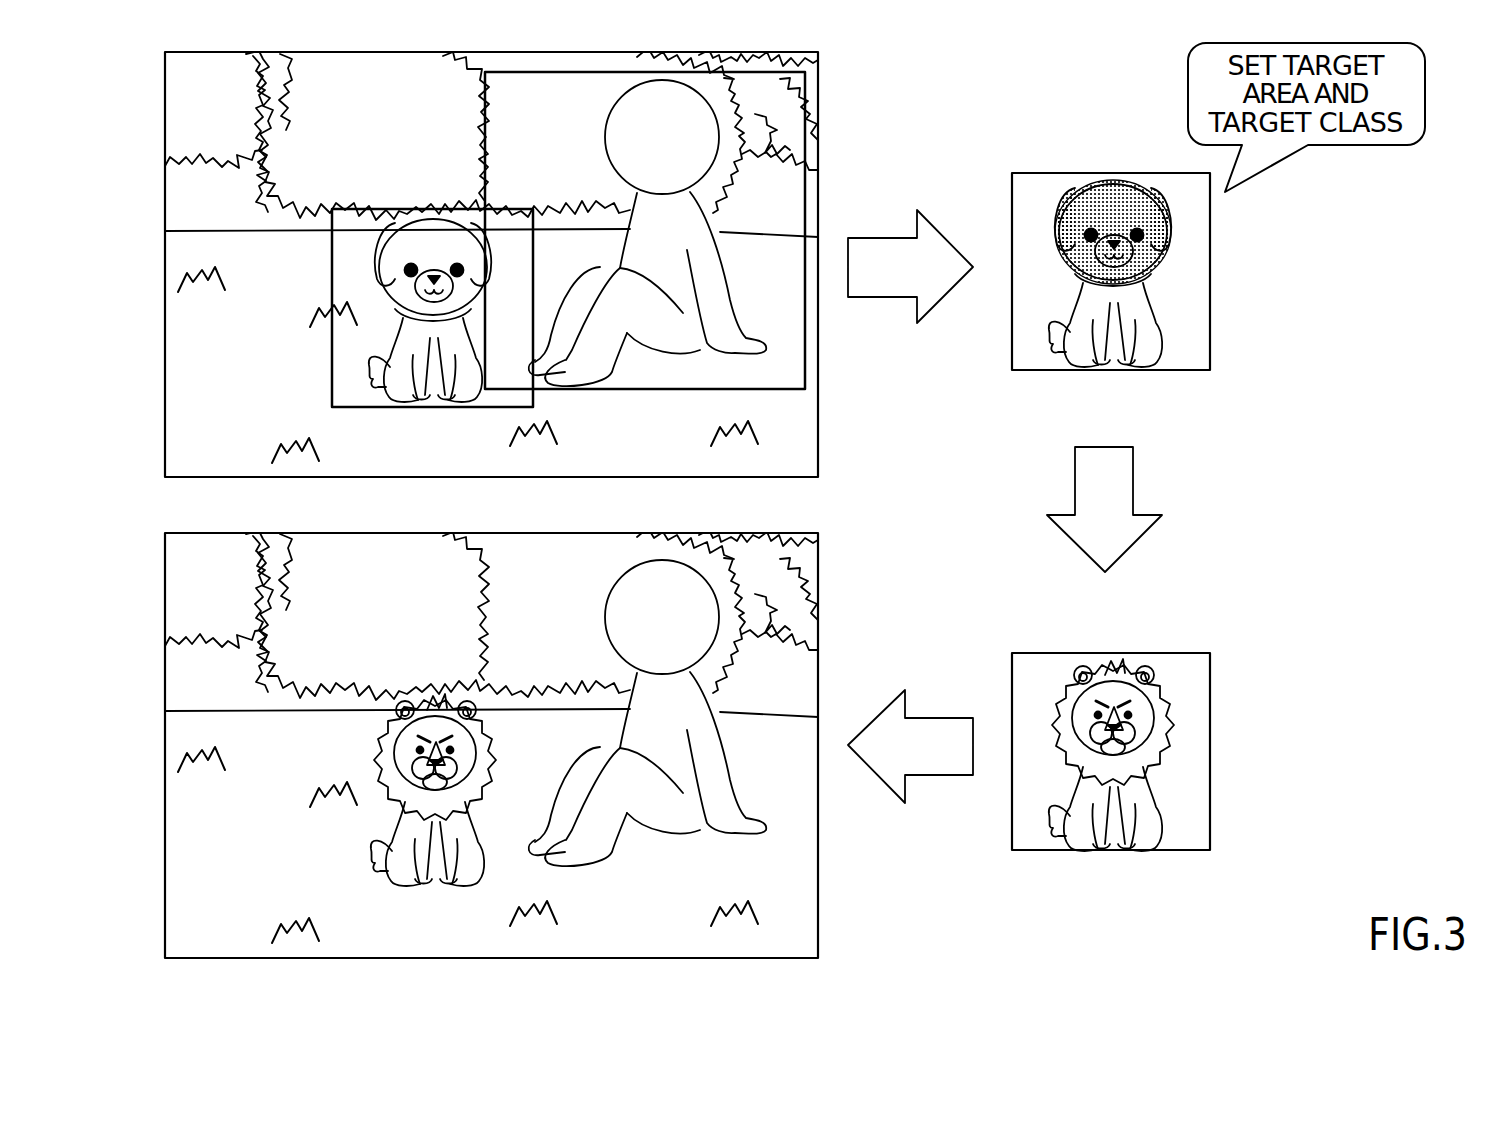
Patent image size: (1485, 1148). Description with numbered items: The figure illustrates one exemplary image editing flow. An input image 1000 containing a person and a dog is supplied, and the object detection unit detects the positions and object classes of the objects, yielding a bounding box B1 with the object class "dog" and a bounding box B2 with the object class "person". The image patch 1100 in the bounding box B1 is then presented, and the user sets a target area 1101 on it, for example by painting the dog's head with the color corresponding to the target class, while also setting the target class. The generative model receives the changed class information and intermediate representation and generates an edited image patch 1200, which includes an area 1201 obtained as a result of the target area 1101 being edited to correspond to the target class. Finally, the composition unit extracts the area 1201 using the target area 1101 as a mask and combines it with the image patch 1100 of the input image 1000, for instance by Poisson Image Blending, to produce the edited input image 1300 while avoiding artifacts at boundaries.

The input image 1000 is at (503, 262).
The bounding box B1 is at (332, 383).
The bounding box B2 is at (808, 352).
The image patch 1100 is at (1154, 255).
The target area 1101 is at (1176, 233).
The edited image patch 1200 is at (1155, 736).
The area 1201 is at (1175, 722).
The edited input image 1300 is at (819, 558).